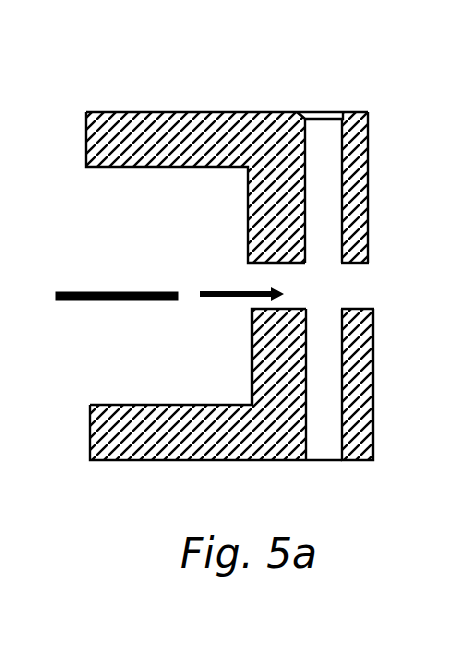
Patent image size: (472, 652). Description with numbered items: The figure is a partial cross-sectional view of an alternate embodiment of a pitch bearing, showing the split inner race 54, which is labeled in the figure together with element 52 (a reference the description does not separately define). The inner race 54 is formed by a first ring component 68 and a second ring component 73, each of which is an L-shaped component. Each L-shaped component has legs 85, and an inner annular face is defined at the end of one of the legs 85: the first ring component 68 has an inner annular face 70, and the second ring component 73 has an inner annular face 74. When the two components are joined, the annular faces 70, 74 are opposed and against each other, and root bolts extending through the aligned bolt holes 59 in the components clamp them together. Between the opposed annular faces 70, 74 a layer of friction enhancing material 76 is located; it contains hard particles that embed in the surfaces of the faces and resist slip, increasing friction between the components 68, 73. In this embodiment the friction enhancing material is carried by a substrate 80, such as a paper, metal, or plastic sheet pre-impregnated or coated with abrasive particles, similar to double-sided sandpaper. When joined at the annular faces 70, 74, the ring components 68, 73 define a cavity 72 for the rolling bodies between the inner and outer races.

The nozzle 52 is at (176, 82).
The inner race 54 is at (267, 263).
The bolt holes 59 is at (300, 142).
The first ring component 68 is at (368, 183).
The inner annular face 70 is at (352, 263).
The cavity 72 is at (192, 255).
The second ring component 73 is at (373, 381).
The inner annular face 74 is at (366, 309).
The layer of friction enhancing material 76 is at (73, 284).
The substrate 80 is at (100, 300).
The legs 85 is at (248, 228).